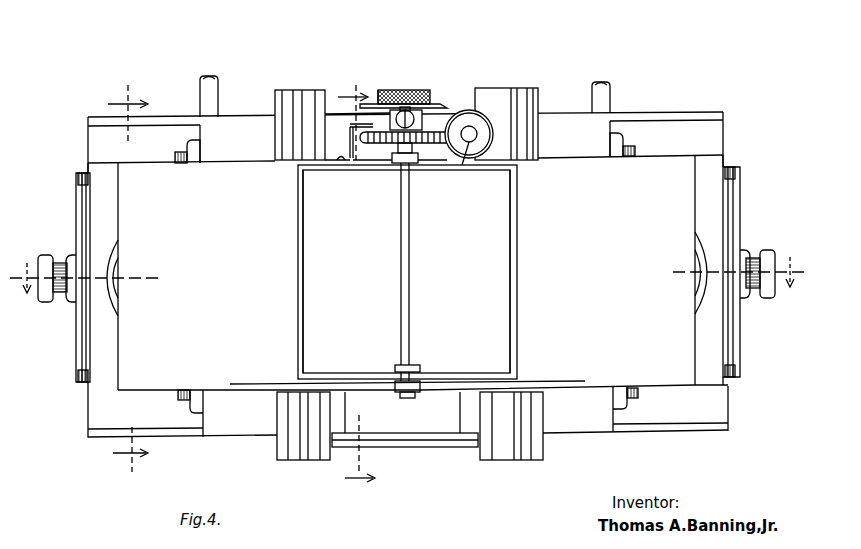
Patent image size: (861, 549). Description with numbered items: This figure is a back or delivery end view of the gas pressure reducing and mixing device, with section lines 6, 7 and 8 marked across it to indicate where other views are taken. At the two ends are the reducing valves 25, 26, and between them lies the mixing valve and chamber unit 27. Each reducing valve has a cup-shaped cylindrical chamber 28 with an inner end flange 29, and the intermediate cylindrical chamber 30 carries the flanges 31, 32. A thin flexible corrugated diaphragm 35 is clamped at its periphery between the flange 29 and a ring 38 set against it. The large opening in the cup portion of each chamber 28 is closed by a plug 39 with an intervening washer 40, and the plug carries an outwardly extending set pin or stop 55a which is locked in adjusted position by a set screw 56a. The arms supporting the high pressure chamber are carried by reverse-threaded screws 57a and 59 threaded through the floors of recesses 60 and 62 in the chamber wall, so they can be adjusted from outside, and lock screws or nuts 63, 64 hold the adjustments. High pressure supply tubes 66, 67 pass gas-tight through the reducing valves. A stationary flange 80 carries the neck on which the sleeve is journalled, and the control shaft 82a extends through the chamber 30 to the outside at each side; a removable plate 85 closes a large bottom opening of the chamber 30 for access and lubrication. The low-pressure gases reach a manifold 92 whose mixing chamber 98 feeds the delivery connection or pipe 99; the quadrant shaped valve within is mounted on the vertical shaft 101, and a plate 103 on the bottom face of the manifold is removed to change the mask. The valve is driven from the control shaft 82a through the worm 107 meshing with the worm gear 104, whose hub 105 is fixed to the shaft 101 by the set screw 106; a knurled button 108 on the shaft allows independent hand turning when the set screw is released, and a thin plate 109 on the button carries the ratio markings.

The section line 6- 6 is at (128, 281).
The section line 7- 7 is at (403, 270).
The section line 8- 8 is at (356, 290).
The reducing valve 25 is at (672, 110).
The reducing valve 26 is at (240, 110).
The mixing valve and chamber unit 27 is at (556, 128).
The cylindrical chamber 28 is at (405, 142).
The inner end flange 29 is at (285, 92).
The intermediate cylindrical chamber 30 is at (331, 110).
The flange 31 is at (473, 125).
The flange 32 is at (310, 92).
The corrugated diaphragm 35 is at (293, 92).
The ring 38 is at (305, 100).
The plug 39 is at (60, 183).
The washer 40 is at (80, 173).
The set pin or stop 55a is at (60, 292).
The set screw 56a is at (72, 257).
The screw 57a is at (176, 156).
The screw 59 is at (178, 394).
The recess 60 is at (405, 142).
The recess 62 is at (408, 411).
The lock screw or nut 63 is at (193, 140).
The lock screw or nut 64 is at (195, 413).
The high pressure supply tube 66 is at (603, 82).
The high pressure supply tube 67 is at (203, 80).
The flange 80 is at (496, 450).
The control shaft 82a is at (462, 165).
The removable plate 85 is at (392, 448).
The manifold 92 is at (264, 271).
The mixing chamber 98 is at (476, 271).
The delivery connection or pipe 99 is at (518, 243).
The vertical shaft 101 is at (404, 297).
The plate 103 is at (440, 395).
The worm gear 104 is at (372, 143).
The hub 105 is at (422, 120).
The set screw 106 is at (410, 92).
The worm 107 is at (469, 135).
The knurled button 108 is at (386, 90).
The thin plate 109 is at (436, 103).